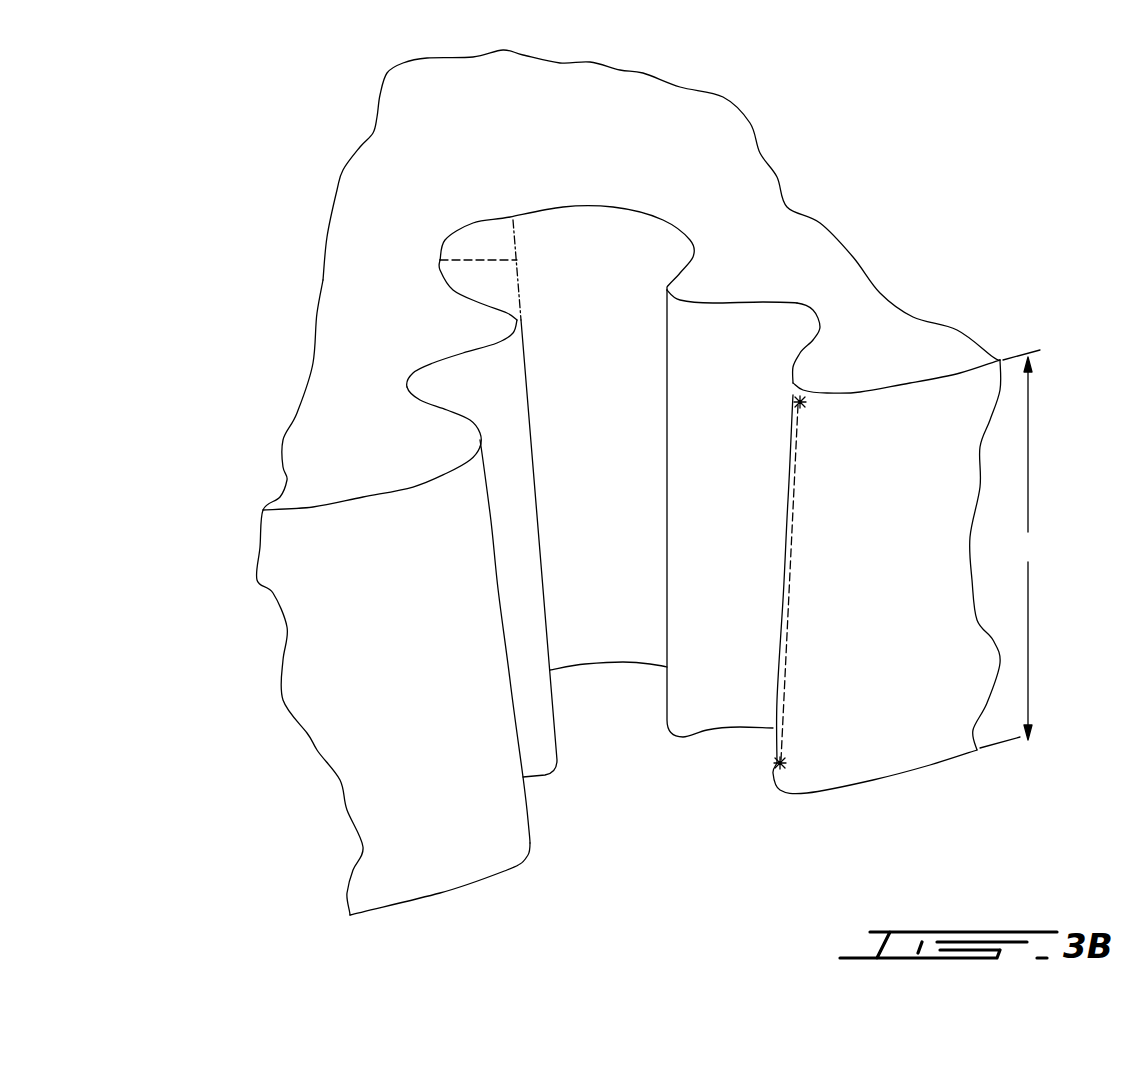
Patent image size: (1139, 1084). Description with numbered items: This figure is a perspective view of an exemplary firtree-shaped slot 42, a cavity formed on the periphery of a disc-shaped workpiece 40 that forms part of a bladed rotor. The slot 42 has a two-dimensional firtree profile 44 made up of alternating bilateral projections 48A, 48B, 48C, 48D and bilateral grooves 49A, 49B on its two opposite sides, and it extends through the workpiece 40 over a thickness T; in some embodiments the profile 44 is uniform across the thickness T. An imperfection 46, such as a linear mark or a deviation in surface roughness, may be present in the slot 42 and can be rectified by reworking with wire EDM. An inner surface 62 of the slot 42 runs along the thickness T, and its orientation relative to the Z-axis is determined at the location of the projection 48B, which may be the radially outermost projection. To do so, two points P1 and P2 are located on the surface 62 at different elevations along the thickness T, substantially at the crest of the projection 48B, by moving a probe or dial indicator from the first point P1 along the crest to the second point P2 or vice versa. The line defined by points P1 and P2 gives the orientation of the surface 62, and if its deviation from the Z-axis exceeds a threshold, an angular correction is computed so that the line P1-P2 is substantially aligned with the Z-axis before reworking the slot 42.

The workpiece 40 is at (352, 268).
The firtree-shaped slot 42 is at (626, 815).
The two-dimensional firtree profile 44 is at (711, 291).
The imperfection 46 is at (437, 260).
The projection 48A is at (670, 293).
The projection 48B is at (817, 380).
The projection 48C is at (500, 322).
The projection 48D is at (470, 430).
The groove 49A is at (800, 327).
The groove 49B is at (430, 380).
The inner surface 62 is at (593, 247).
The first point P1 is at (798, 402).
The second point P2 is at (779, 763).
The thickness T is at (1010, 549).